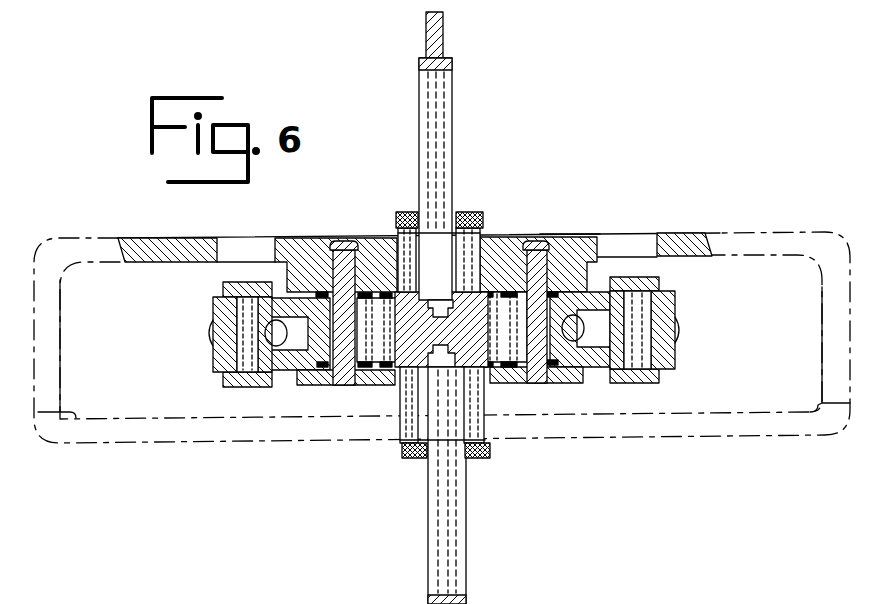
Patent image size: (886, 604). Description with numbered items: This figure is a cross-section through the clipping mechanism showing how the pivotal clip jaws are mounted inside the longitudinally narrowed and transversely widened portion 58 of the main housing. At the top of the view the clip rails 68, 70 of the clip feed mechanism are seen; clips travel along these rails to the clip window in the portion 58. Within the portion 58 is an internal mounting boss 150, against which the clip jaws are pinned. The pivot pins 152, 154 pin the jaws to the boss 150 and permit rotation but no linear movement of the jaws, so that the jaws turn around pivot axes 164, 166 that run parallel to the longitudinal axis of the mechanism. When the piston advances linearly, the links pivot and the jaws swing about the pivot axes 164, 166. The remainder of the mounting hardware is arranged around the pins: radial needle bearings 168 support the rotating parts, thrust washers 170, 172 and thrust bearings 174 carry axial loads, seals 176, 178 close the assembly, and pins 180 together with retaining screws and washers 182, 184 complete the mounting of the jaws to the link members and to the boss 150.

The longitudinally narrowed and transversely widened portion 58 is at (563, 236).
The clip rail 68 is at (478, 474).
The clip rail 70 is at (443, 40).
The internal mounting boss 150 is at (620, 233).
The pivot pin 152 is at (326, 395).
The pivot pin 154 is at (545, 393).
The pivot axis 164 is at (345, 405).
The pivot axis 166 is at (503, 415).
The radial needle bearings 168 is at (317, 320).
The thrust washer 170 is at (337, 250).
The thrust washer 172 is at (388, 258).
The thrust bearings 174 is at (372, 258).
The seal 176 is at (326, 256).
The seal 178 is at (385, 395).
The pins 180 is at (222, 360).
The retaining screws and washers 182 is at (243, 282).
The retaining screws and washers 184 is at (228, 290).